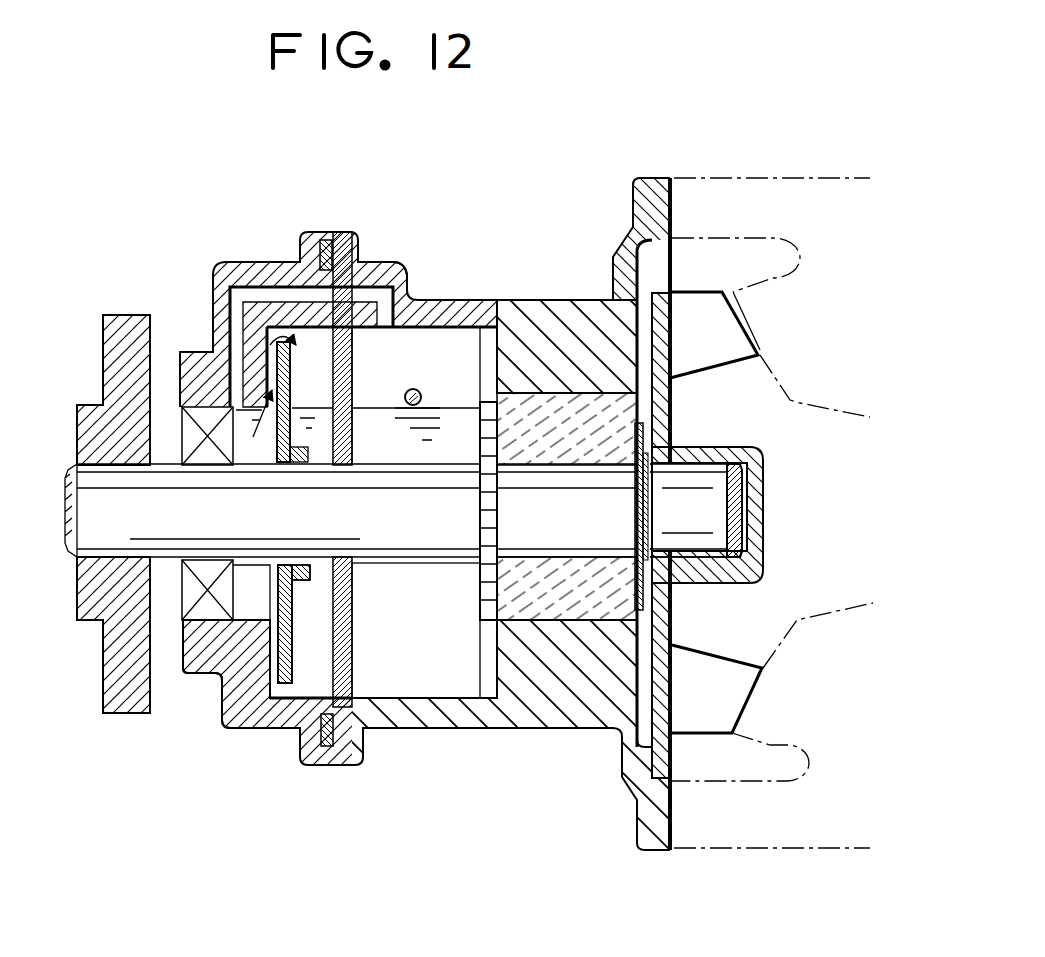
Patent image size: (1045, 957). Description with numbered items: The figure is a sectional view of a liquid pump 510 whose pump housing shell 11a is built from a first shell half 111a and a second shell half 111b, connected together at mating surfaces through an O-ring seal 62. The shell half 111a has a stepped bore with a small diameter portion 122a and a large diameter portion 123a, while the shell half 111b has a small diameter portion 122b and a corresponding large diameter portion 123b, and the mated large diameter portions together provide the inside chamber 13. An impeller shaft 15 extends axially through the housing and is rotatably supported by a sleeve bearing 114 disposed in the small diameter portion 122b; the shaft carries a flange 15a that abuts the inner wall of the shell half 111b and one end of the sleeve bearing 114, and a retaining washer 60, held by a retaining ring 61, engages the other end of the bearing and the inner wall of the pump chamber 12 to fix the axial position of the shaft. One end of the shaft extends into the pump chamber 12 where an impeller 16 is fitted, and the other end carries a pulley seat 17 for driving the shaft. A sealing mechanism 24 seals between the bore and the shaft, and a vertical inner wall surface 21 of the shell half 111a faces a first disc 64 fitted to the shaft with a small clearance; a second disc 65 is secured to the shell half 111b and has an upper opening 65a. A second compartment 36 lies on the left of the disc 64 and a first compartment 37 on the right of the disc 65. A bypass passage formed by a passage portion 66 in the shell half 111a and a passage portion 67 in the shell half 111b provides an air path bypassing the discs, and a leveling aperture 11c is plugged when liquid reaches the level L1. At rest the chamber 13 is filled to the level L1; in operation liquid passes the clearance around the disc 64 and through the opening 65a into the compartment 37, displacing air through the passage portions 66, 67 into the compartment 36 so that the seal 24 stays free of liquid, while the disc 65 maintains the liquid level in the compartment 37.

The liquid pump 510 is at (214, 255).
The pump housing shell 11a is at (279, 248).
The first shell half 111a is at (240, 277).
The second shell half 111b is at (557, 313).
The leveling aperture 11c is at (415, 392).
The pump chamber 12 is at (663, 263).
The intermediate chamber 13 is at (412, 366).
The impeller shaft 15 is at (384, 502).
The flange 15a is at (488, 620).
The impeller 16 is at (717, 338).
The pulley seat 17 is at (90, 421).
The vertical inner wall surface 21 is at (252, 612).
The sealing mechanism 24 is at (192, 596).
The second compartment 36 is at (273, 602).
The first compartment 37 is at (438, 633).
The retaining washer 60 is at (645, 596).
The retaining ring 61 is at (650, 557).
The O-ring seal 62 is at (324, 763).
The first disc 64 is at (280, 383).
The second disc 65 is at (347, 637).
The opening 65a is at (343, 323).
The passage portion 66 is at (246, 308).
The passage portion 67 is at (377, 293).
The sleeve bearing 114 is at (588, 642).
The small diameter portion 122a is at (230, 720).
The small diameter portion 122b is at (545, 614).
The large diameter portion 123a is at (310, 692).
The seal 123b is at (426, 690).
The liquid level L1 is at (432, 405).